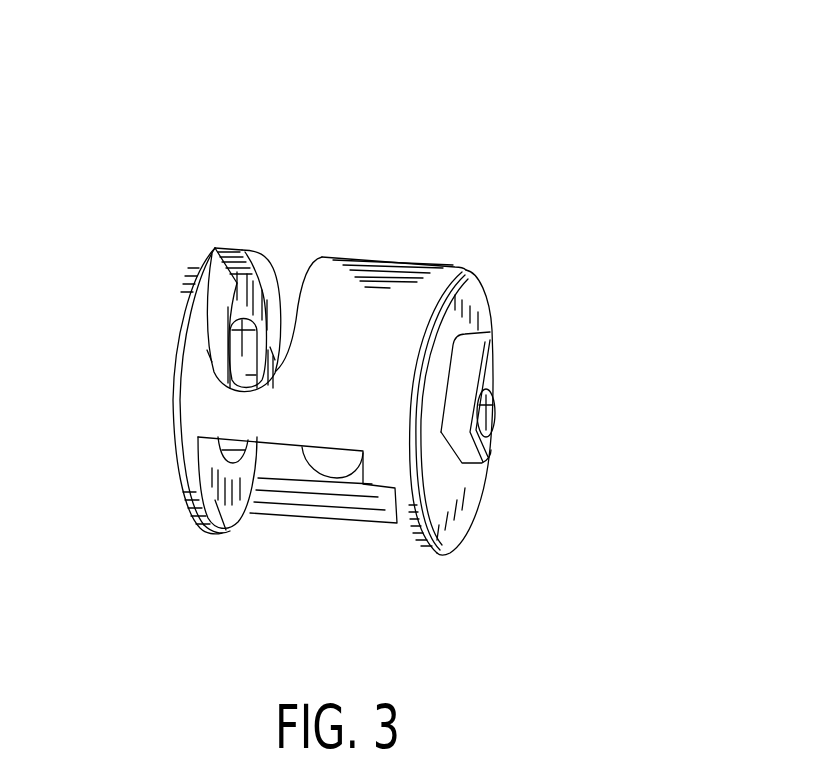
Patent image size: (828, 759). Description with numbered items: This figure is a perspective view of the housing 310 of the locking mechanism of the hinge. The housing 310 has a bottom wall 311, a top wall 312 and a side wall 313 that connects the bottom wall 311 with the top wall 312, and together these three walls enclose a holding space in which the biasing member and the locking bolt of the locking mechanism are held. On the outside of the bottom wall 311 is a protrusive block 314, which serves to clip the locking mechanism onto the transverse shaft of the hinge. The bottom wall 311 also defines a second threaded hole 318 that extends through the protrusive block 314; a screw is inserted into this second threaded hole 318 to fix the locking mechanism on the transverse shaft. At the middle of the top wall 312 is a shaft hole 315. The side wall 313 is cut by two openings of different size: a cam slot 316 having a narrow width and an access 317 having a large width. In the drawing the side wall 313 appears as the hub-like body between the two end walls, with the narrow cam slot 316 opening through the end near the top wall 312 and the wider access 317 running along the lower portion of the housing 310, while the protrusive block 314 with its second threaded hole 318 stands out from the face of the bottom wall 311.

The housing 310 is at (212, 113).
The bottom wall 311 is at (467, 303).
The top wall 312 is at (227, 533).
The side wall 313 is at (400, 287).
The protrusive block 314 is at (497, 377).
The shaft hole 315 is at (215, 248).
The cam slot 316 is at (285, 280).
The access 317 is at (290, 552).
The second threaded hole 318 is at (488, 412).